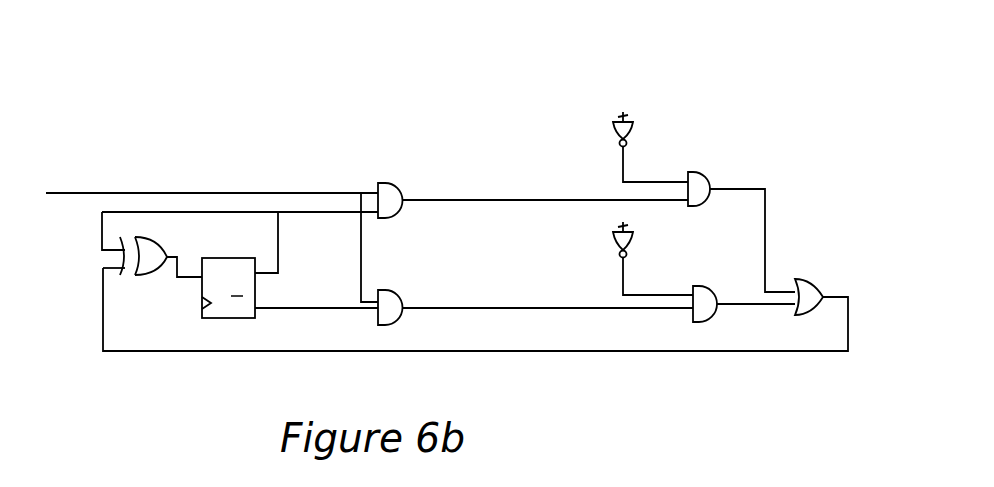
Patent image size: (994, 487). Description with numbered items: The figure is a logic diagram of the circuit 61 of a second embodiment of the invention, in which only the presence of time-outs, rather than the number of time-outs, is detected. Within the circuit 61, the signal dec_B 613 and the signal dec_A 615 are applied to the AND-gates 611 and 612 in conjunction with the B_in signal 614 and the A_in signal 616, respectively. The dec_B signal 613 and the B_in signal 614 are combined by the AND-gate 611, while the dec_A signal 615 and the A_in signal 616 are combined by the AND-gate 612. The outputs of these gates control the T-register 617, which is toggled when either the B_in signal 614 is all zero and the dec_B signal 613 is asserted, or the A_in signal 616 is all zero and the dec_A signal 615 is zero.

The circuit 61 is at (763, 73).
The AND-gate 611 is at (705, 175).
The AND-gate 612 is at (702, 295).
The dec_B signal 613 is at (467, 162).
The B_in signal 614 is at (618, 93).
The dec_A signal 615 is at (467, 273).
The A_in signal 616 is at (667, 220).
The T-register 617 is at (205, 318).